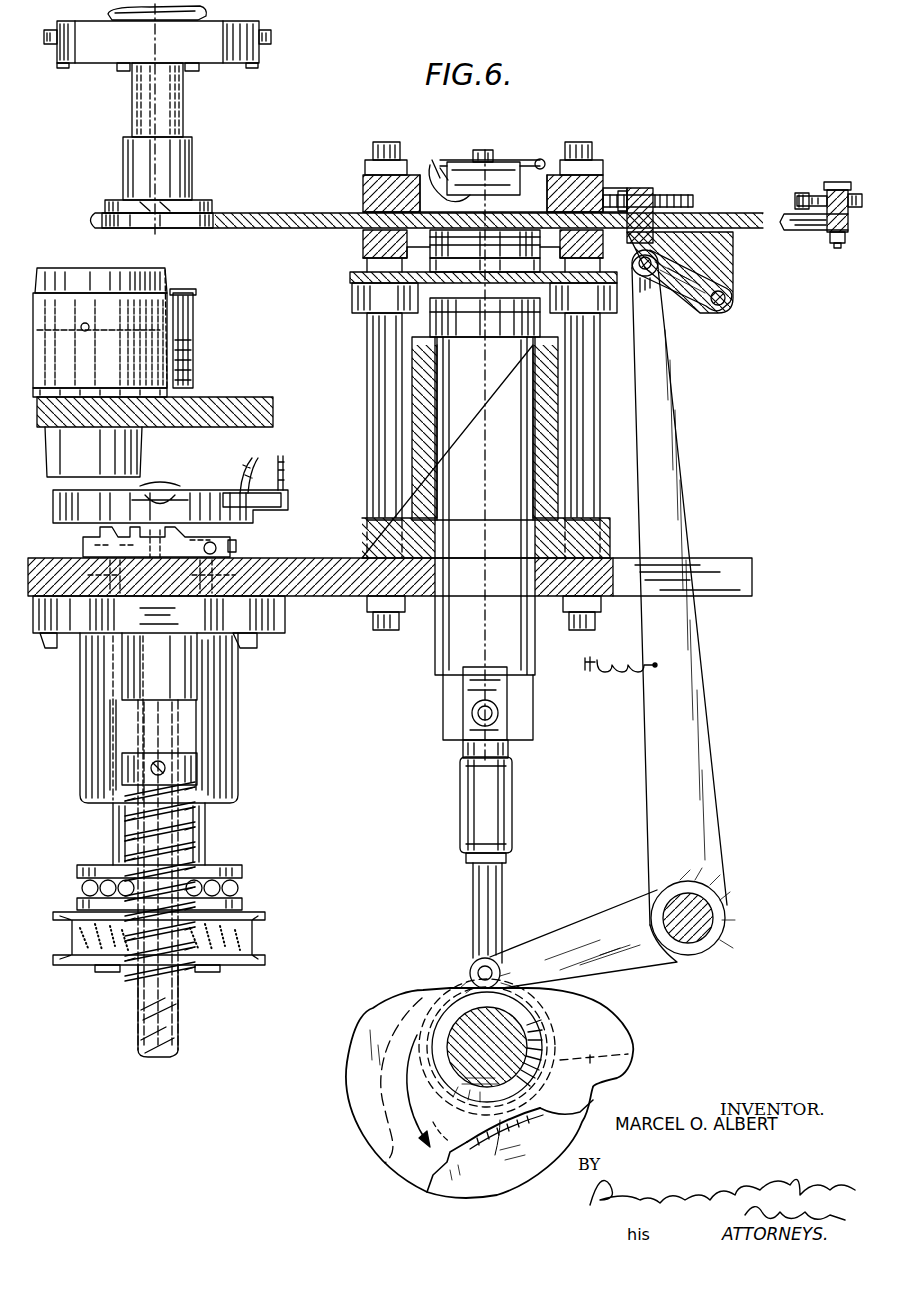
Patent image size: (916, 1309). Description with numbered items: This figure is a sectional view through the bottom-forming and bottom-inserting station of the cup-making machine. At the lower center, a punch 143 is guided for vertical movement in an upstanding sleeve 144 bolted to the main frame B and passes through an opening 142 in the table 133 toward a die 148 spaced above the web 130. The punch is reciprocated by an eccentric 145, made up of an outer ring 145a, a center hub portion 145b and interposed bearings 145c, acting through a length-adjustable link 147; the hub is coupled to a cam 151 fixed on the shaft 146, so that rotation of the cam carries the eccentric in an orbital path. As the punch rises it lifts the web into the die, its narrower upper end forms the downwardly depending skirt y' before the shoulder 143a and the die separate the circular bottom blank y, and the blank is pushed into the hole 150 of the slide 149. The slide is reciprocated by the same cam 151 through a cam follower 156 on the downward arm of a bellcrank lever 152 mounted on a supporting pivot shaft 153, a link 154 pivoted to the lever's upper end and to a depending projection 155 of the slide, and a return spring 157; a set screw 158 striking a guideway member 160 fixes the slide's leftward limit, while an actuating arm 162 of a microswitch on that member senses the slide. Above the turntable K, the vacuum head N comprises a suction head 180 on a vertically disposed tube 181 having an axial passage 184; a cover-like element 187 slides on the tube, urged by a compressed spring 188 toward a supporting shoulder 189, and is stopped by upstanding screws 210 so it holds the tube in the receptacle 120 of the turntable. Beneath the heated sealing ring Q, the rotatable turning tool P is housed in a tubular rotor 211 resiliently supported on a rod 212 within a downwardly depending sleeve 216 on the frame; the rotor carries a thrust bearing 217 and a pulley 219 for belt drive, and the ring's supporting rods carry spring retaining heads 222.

The receptacle 120 is at (168, 297).
The web 130 is at (585, 270).
The table 133 is at (352, 278).
The opening 142 is at (468, 292).
The punch 143 is at (533, 337).
The shoulder 143a is at (490, 340).
The upstanding sleeve 144 is at (555, 470).
The eccentric 145 is at (508, 1088).
The outer ring 145a is at (530, 1180).
The center hub portion 145b is at (532, 1122).
The bearings 145c is at (497, 1150).
The shaft 146 is at (513, 1028).
The link 147 is at (473, 890).
The die 148 is at (432, 236).
The slide 149 is at (318, 213).
The hole 150 is at (168, 230).
The cam 151 is at (620, 1068).
The bellcrank lever 152 is at (645, 811).
The supporting pivot shaft 153 is at (720, 916).
The link 154 is at (690, 295).
The depending projection 155 is at (730, 272).
The cam follower 156 is at (470, 964).
The spring 157 is at (622, 672).
The set screw 158 is at (672, 200).
The member 160 is at (600, 185).
The actuating arm 162 is at (436, 175).
The suction head 180 is at (193, 208).
The tube 181 is at (183, 112).
The passage 184 is at (132, 162).
The cover-like element 187 is at (226, 62).
The compressed spring 188 is at (107, 13).
The supporting shoulder 189 is at (132, 72).
The upstanding screws 210 is at (194, 326).
The tubular rotor 211 is at (207, 845).
The rod 212 is at (180, 1047).
The downwardly depending sleeve 216 is at (238, 731).
The thrust bearing 217 is at (243, 888).
The pulley 219 is at (240, 966).
The spring retaining head 222 is at (122, 768).
The main frame B is at (313, 606).
The turntable K is at (232, 401).
The vacuum head N is at (228, 208).
The rotatable turning tool P is at (244, 554).
The electrically-heated stationary ring Q is at (302, 488).
The die block Z is at (68, 266).
The bottom blank y is at (205, 229).